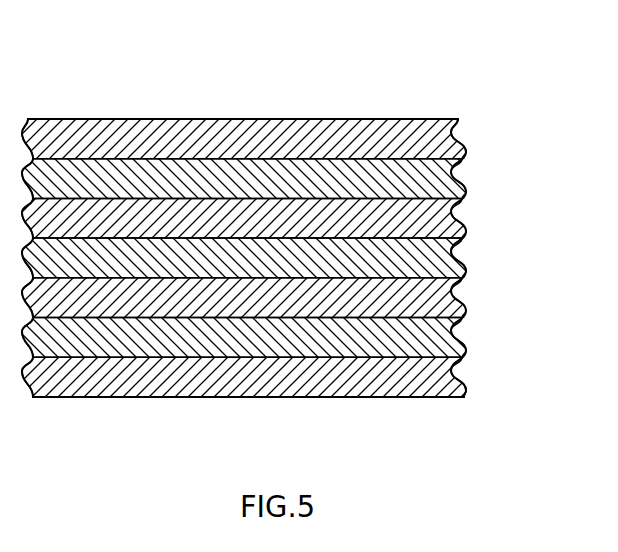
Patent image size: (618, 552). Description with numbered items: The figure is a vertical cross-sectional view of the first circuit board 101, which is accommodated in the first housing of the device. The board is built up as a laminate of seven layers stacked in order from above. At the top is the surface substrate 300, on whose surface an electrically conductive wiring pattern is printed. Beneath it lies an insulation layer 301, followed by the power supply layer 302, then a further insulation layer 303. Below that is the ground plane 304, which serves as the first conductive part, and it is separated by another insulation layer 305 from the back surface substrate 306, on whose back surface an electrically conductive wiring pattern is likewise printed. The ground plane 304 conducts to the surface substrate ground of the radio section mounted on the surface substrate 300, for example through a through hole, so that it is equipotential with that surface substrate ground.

The first circuit board 101 is at (244, 207).
The surface substrate 300 is at (459, 143).
The insulation layer 301 is at (459, 183).
The power supply layer 302 is at (459, 222).
The insulation layer 303 is at (459, 262).
The ground plane 304 is at (459, 302).
The insulation layer 305 is at (459, 342).
The back surface substrate 306 is at (459, 381).